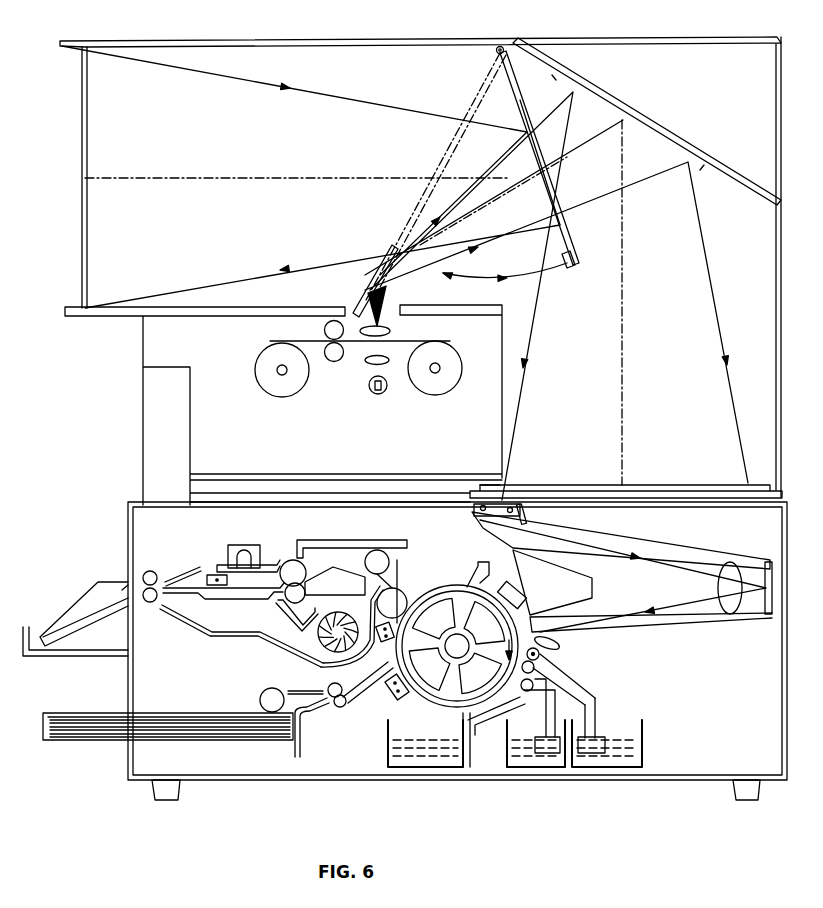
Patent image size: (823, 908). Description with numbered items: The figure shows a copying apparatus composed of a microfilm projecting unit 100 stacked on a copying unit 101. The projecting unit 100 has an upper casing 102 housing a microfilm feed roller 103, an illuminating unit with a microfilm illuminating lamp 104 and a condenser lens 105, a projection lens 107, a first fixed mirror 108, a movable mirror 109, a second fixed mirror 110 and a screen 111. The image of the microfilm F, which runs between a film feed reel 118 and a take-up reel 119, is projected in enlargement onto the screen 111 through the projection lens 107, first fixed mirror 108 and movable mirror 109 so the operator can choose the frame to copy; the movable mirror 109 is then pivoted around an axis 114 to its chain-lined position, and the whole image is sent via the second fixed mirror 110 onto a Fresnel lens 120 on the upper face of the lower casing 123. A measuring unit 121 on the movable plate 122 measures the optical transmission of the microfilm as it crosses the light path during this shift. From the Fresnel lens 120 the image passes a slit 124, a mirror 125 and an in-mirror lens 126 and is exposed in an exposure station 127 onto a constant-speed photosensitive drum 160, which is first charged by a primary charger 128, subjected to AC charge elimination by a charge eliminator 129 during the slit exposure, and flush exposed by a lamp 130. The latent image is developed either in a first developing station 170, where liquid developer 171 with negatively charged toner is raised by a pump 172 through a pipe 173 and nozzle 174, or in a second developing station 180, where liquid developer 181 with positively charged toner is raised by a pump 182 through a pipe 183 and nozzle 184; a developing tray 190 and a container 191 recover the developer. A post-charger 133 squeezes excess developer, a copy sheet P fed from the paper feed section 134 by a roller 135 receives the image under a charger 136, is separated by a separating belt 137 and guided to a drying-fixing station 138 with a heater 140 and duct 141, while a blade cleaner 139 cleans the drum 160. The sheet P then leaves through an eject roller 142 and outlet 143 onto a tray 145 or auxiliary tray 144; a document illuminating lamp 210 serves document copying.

The microfilm projecting unit 100 is at (663, 40).
The copying unit 101 is at (660, 780).
The upper casing 102 is at (325, 38).
The microfilm feed roller 103 is at (336, 362).
The microfilm illuminating lamp 104 is at (372, 391).
The condenser lens 105 is at (389, 366).
The projection lens 107 is at (392, 333).
The first fixed mirror 108 is at (366, 288).
The movable mirror 109 is at (560, 200).
The second fixed mirror 110 is at (640, 118).
The screen 111 is at (83, 234).
The axis 114 is at (500, 46).
The film feed reel 118 is at (454, 387).
The take-up reel 119 is at (270, 386).
The Fresnel lens 120 is at (724, 488).
The measuring unit 121 is at (570, 269).
The movable plate 122 is at (518, 85).
The lower casing 123 is at (700, 778).
The slit 124 is at (505, 490).
The mirror 125 is at (528, 515).
The in-mirror lens 126 is at (746, 562).
The exposure station 127 is at (578, 612).
The primary charger 128 is at (520, 592).
The charge eliminator 129 is at (553, 649).
The lamp 130 is at (540, 657).
The post-charger 133 is at (400, 702).
The paper feed section 134 is at (172, 702).
The roller 135 is at (265, 690).
The charger 136 is at (346, 698).
The separating belt 137 is at (398, 578).
The drying-fixing station 138 is at (320, 570).
The blade cleaner 139 is at (482, 572).
The heater 140 is at (340, 580).
The duct 141 is at (217, 572).
The eject roller 142 is at (153, 573).
The outlet 143 is at (128, 588).
The auxiliary tray 144 is at (67, 608).
The tray 145 is at (46, 658).
The photosensitive drum 160 is at (446, 582).
The first developing station 170 is at (498, 768).
The liquid developer 171 is at (515, 766).
The pump 172 is at (552, 762).
The pipe 173 is at (588, 702).
The nozzle 174 is at (530, 700).
The second developing station 180 is at (646, 737).
The liquid developer 181 is at (618, 763).
The pump 182 is at (592, 762).
The pipe 183 is at (590, 722).
The nozzle 184 is at (520, 669).
The developing tray 190 is at (505, 708).
The container 191 is at (388, 749).
The document illuminating lamp 210 is at (476, 511).
The microfilm F is at (300, 341).
The copy sheet P is at (255, 735).